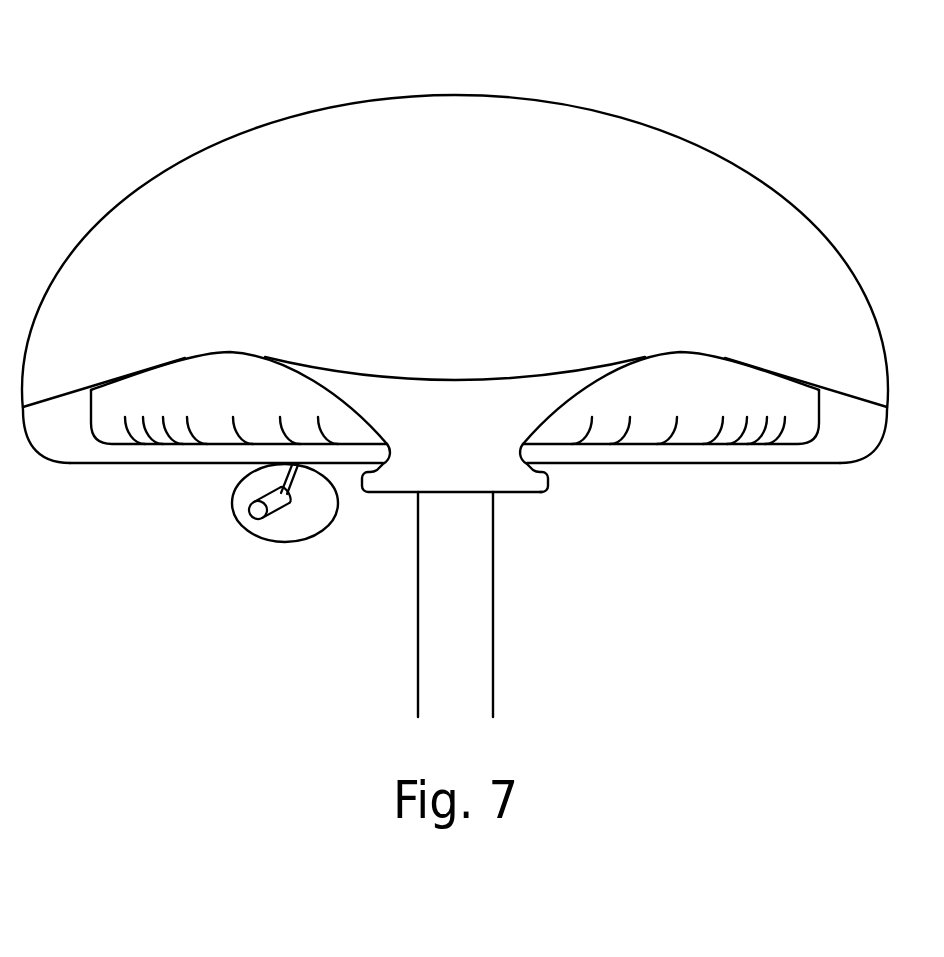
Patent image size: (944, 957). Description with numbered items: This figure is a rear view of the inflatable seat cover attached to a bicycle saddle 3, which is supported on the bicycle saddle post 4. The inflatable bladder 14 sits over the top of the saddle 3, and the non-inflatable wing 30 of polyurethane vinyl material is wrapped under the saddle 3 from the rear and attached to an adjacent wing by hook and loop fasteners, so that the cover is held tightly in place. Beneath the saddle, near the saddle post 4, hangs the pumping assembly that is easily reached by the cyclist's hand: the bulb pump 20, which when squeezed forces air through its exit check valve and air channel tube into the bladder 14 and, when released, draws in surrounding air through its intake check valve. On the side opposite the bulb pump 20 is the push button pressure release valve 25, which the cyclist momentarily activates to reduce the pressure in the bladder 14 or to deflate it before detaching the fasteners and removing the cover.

The bladder 14 is at (605, 163).
The saddle 3 is at (803, 413).
The wing 30 is at (435, 417).
The bicycle saddle post 4 is at (463, 622).
The bulb pump 20 is at (255, 533).
The pressure release valve 25 is at (250, 510).